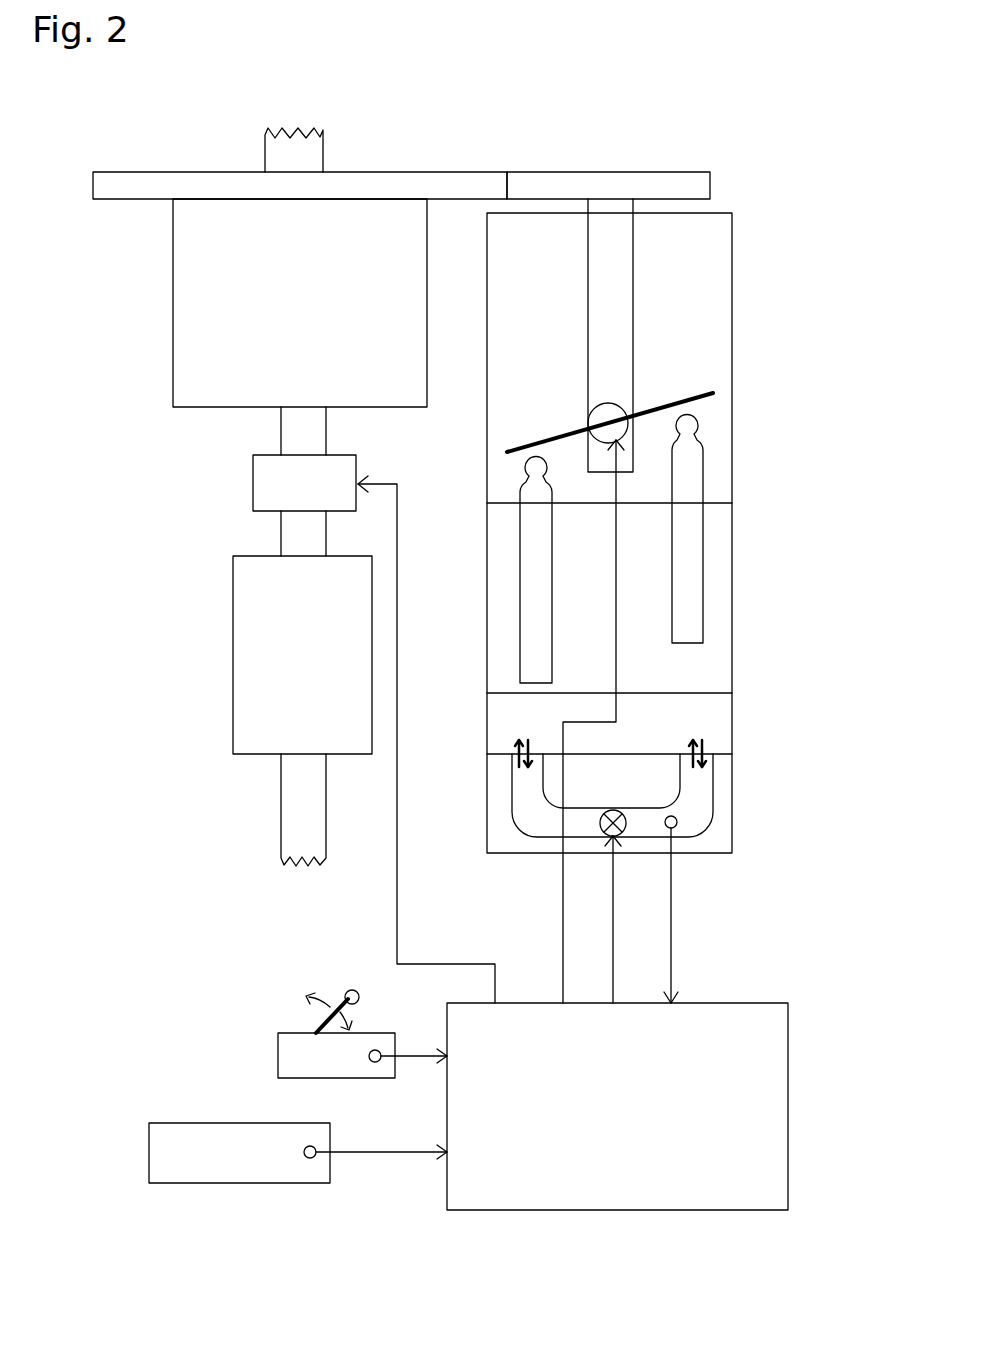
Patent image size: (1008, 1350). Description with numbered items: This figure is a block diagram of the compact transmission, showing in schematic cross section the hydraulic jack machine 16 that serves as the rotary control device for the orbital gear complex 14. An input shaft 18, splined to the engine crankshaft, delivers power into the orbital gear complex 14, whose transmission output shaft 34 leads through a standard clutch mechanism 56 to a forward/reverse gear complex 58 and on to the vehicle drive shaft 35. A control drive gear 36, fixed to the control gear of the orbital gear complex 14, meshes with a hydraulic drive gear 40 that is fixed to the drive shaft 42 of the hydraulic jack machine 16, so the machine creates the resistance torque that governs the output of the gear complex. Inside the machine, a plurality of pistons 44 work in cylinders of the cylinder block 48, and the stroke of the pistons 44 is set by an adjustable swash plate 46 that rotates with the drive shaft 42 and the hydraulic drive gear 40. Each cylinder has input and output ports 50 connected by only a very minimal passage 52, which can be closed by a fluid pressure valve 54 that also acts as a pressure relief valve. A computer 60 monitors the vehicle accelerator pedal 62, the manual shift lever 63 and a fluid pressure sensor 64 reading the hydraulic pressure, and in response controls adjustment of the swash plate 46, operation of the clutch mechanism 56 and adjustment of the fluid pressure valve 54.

The orbital gear complex 14 is at (300, 303).
The hydraulic jack machine 16 is at (815, 398).
The input shaft 18 is at (293, 150).
The transmission output shaft 34 is at (292, 430).
The vehicle drive shaft 35 is at (300, 809).
The control drive gear 36 is at (412, 182).
The hydraulic drive gear 40 is at (672, 180).
The drive shaft 42 is at (607, 267).
The pistons 44 is at (533, 627).
The adjustable swash plate 46 is at (685, 398).
The cylinder block 48 is at (715, 662).
The input and output ports 50 is at (517, 757).
The passage 52 is at (692, 785).
The fluid pressure valve 54 is at (598, 827).
The clutch mechanism 56 is at (304, 505).
The forward/reverse gear complex 58 is at (302, 655).
The computer 60 is at (617, 1106).
The vehicle accelerator pedal 62 is at (205, 1148).
The manual shift lever 63 is at (302, 1063).
The fluid pressure sensor 64 is at (677, 822).